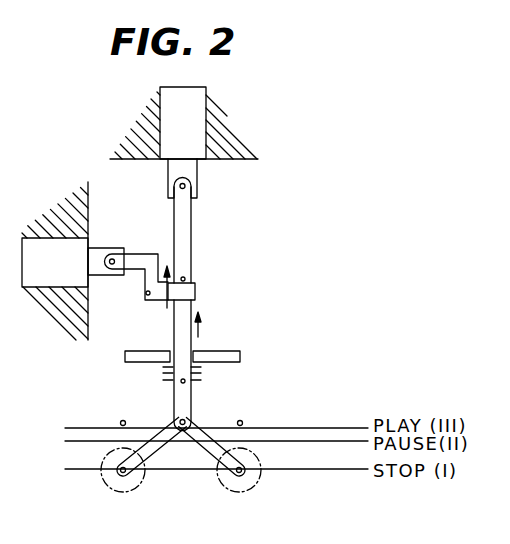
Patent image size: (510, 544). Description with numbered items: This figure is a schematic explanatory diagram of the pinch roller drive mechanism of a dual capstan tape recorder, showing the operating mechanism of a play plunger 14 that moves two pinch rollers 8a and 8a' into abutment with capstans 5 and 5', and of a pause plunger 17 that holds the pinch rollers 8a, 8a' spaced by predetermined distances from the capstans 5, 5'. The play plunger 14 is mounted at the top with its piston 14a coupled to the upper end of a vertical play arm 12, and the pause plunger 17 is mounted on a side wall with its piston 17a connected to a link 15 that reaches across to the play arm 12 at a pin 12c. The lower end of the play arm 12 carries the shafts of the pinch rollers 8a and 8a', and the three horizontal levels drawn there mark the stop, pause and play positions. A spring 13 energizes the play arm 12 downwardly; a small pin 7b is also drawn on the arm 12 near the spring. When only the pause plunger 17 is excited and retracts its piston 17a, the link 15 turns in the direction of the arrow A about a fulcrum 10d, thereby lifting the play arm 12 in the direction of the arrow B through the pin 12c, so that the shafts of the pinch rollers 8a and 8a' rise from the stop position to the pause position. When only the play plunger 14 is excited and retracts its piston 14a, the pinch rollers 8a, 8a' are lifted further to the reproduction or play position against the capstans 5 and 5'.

The play plunger 14 is at (195, 142).
The piston of play plunger 14a is at (193, 177).
The play arm 12 is at (191, 220).
The pin 12c is at (186, 279).
The pause plunger 17 is at (65, 274).
The piston of pause plunger 17a is at (99, 249).
The link 15 is at (135, 266).
The fulcrum 10d is at (147, 297).
The direction arrow A is at (165, 259).
The direction arrow B is at (201, 327).
The spring 13 is at (196, 368).
The pin on slide rod 7b is at (186, 383).
The capstan 5' is at (109, 404).
The capstan 5 is at (254, 408).
The pinch roller 8a' is at (143, 469).
The pinch roller 8a is at (239, 469).